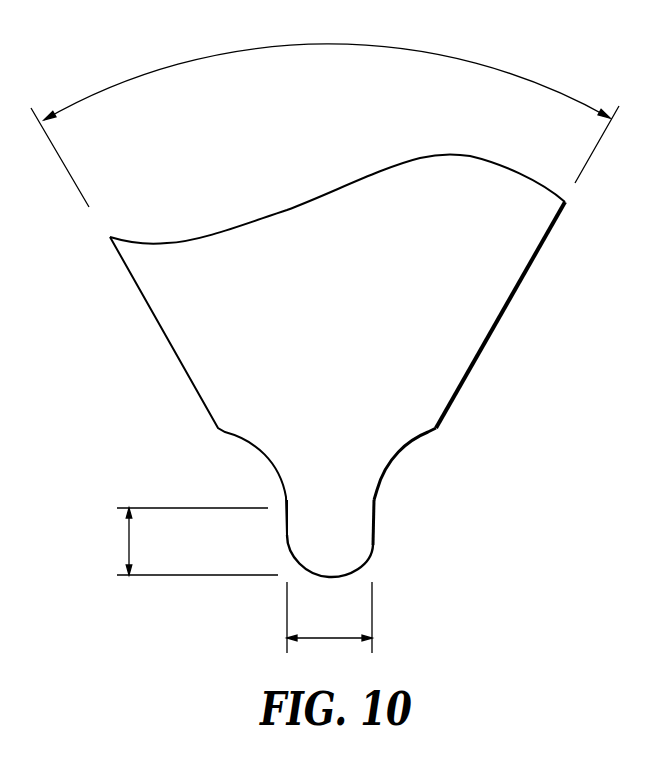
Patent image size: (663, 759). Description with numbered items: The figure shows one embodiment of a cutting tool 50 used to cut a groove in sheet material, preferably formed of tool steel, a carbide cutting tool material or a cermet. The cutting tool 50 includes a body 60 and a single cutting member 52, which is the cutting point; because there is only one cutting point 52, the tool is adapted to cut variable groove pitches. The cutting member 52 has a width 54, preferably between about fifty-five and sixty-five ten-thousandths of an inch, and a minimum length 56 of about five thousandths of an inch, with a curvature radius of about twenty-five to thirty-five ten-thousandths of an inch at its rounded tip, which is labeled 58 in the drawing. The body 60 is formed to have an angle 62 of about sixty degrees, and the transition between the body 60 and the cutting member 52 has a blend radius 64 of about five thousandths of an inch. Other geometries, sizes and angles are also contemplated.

The cutting tool 50 is at (580, 247).
The cutting member 52 is at (382, 507).
The width 54 is at (352, 636).
The minimum length 56 is at (130, 543).
The rounded root 58 is at (370, 560).
The body 60 is at (528, 270).
The angle 62 is at (355, 45).
The blend radius 64 is at (403, 452).